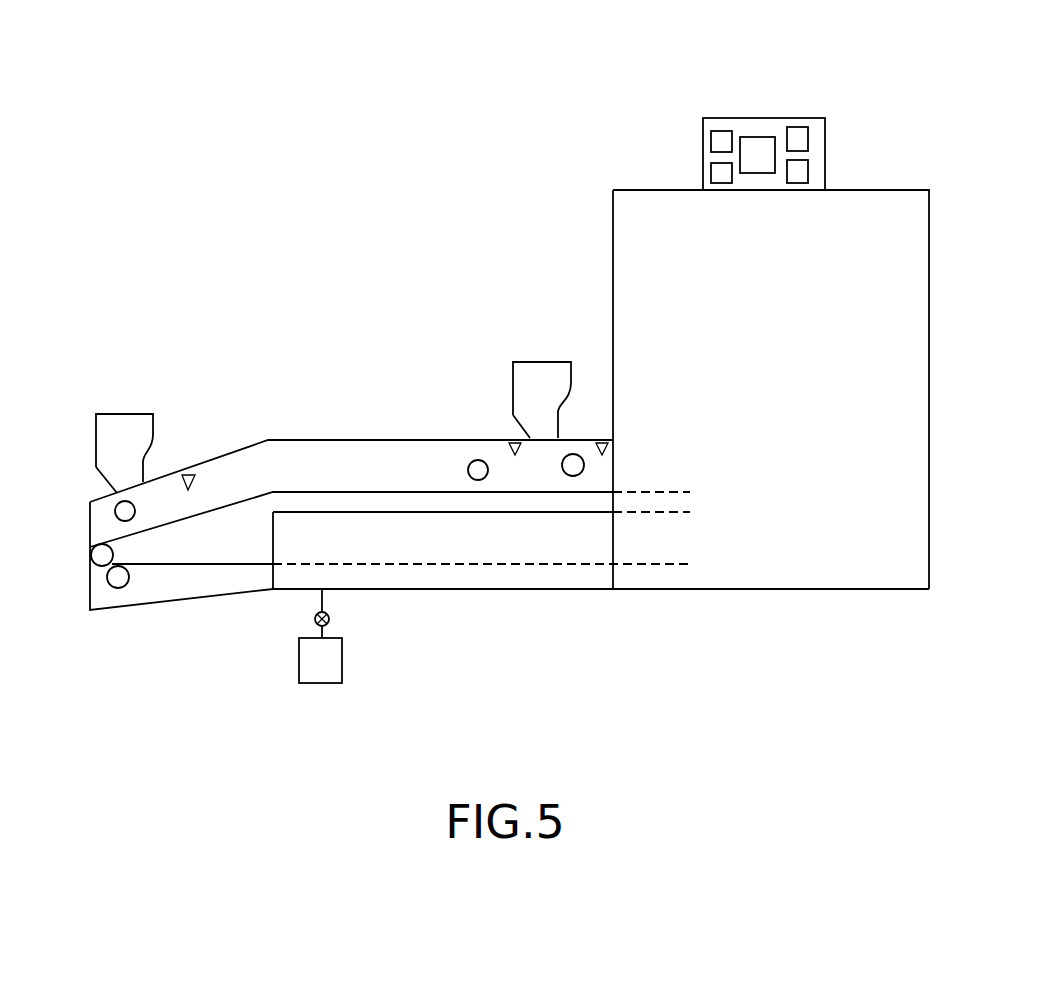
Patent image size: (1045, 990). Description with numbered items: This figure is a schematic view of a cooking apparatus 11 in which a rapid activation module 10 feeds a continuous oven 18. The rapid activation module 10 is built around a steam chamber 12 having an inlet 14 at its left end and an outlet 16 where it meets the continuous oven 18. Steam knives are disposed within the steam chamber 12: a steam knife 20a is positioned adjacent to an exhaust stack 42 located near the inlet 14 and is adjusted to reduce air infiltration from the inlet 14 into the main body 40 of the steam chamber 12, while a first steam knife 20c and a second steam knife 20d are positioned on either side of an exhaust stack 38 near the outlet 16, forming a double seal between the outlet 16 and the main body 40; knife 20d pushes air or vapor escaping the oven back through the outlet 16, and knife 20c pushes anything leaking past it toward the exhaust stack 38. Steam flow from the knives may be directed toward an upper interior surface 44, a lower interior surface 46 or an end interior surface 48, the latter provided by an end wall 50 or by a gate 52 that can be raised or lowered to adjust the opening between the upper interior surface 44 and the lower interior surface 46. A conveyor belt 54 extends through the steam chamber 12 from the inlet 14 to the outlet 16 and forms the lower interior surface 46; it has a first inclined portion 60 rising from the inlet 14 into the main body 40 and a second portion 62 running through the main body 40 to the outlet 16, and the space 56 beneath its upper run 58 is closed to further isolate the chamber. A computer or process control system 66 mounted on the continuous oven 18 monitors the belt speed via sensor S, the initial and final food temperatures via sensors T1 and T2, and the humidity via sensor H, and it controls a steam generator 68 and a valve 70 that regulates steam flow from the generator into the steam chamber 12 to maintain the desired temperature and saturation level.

The rapid activation module 10 is at (336, 377).
The cooking apparatus 11 is at (380, 285).
The steam chamber 12 is at (230, 448).
The inlet 14 is at (74, 564).
The outlet 16 is at (640, 468).
The continuous oven 18 is at (873, 182).
The steam knife 20a is at (188, 473).
The first steam knife 20c is at (513, 437).
The second steam knife 20d is at (598, 440).
The exhaust stack 38 is at (545, 362).
The main body 40 is at (405, 423).
The exhaust stack 42 is at (128, 418).
The upper interior surface 44 is at (310, 441).
The lower interior surface 46 is at (370, 503).
The end interior surface 48 is at (610, 502).
The end wall 50 is at (615, 502).
The gate 52 is at (617, 450).
The conveyor belt 54 is at (188, 565).
The space 56 is at (307, 503).
The upper run 58 is at (395, 492).
The first inclined portion 60 is at (110, 547).
The second portion 62 is at (437, 493).
The computer or process control system 66 is at (768, 118).
The steam generator 68 is at (322, 683).
The valve 70 is at (330, 621).
The humidity sensor H is at (478, 480).
The speed sensor S is at (115, 605).
The initial food temperature sensor T1 is at (135, 513).
The final food temperature sensor T2 is at (563, 472).